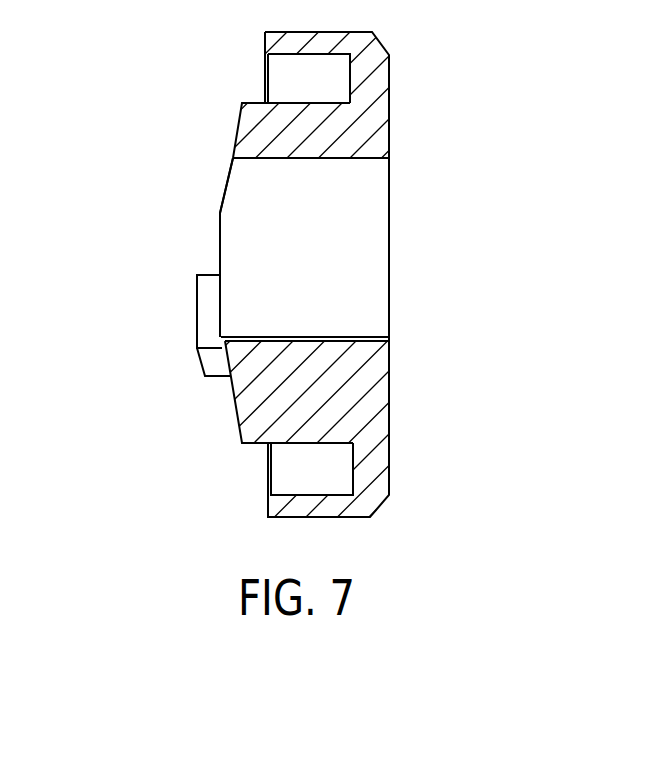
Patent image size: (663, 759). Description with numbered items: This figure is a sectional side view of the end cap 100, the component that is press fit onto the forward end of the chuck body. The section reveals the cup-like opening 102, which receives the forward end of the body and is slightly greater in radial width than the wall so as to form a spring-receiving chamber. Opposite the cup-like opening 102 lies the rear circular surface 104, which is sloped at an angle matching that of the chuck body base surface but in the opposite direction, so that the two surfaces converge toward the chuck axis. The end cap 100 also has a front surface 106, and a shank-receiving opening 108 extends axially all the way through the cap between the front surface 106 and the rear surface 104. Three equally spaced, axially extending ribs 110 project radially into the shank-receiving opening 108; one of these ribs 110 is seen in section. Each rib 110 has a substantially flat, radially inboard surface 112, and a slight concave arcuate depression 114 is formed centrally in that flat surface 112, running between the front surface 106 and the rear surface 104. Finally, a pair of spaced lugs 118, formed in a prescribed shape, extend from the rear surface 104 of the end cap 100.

The end cap 100 is at (135, 63).
The cup-like opening 102 is at (308, 55).
The rear circular surface 104 is at (232, 138).
The front surface 106 is at (390, 130).
The shank-receiving opening 108 is at (357, 159).
The ribs 110 is at (370, 367).
The radially inboard surfaces 112 is at (356, 337).
The concave arcuate depressions 114 is at (390, 340).
The lugs 118 is at (201, 308).